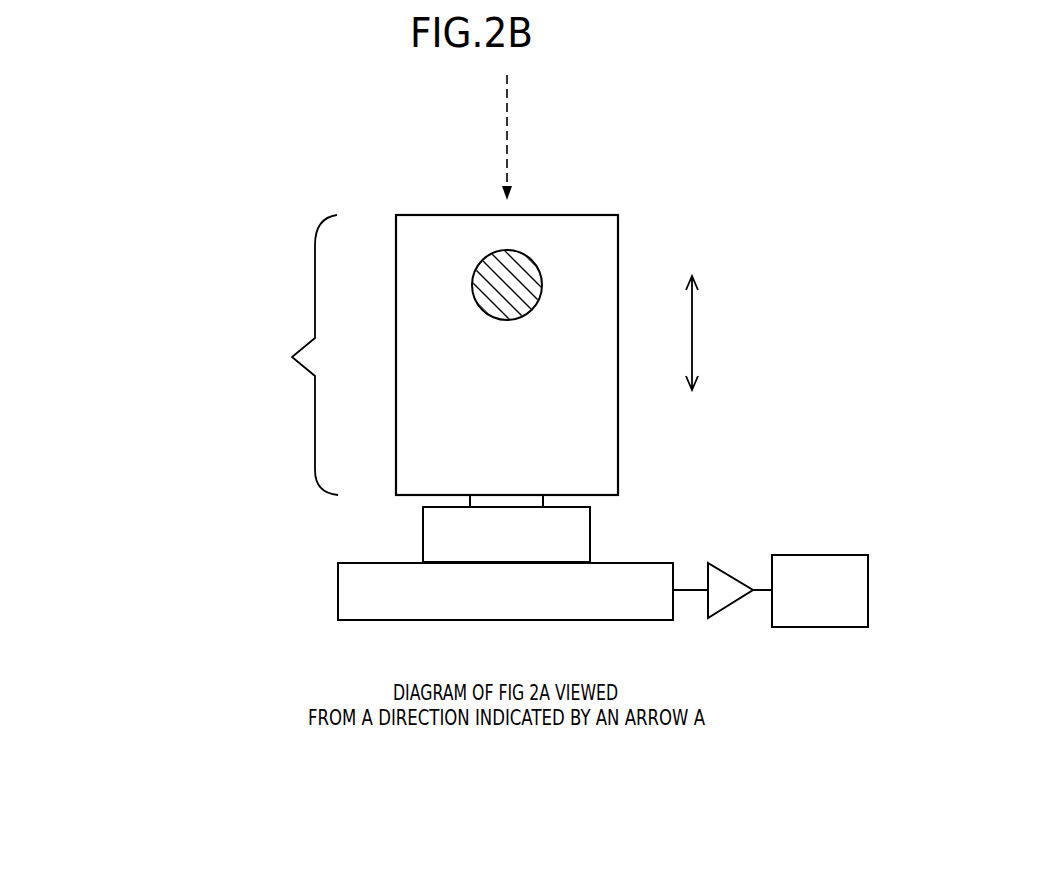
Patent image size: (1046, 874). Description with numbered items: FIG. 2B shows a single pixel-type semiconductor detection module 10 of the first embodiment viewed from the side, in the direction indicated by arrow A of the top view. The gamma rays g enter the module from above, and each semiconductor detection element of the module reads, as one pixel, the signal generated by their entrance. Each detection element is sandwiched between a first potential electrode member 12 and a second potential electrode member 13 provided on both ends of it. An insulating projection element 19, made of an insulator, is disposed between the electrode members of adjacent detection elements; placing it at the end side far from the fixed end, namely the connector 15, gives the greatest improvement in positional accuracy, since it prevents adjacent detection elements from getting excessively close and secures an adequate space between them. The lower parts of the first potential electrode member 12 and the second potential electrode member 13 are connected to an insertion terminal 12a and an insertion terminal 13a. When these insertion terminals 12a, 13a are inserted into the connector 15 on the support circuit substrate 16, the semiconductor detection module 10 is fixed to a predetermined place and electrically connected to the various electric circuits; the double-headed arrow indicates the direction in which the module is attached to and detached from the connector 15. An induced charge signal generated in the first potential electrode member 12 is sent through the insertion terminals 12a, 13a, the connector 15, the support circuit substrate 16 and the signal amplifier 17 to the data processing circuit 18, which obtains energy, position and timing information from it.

The semiconductor detection module 10 is at (367, 344).
The first potential electrode member 12 is at (413, 331).
The second potential electrode member 13 is at (471, 355).
The insertion terminal 12a is at (543, 503).
The insertion terminal 13a is at (612, 486).
The connector 15 is at (585, 532).
The support circuit substrate 16 is at (635, 620).
The signal amplifier 17 is at (722, 610).
The data processing circuit 18 is at (840, 627).
The insulating projection element 19 is at (525, 287).
The gamma rays g is at (504, 150).